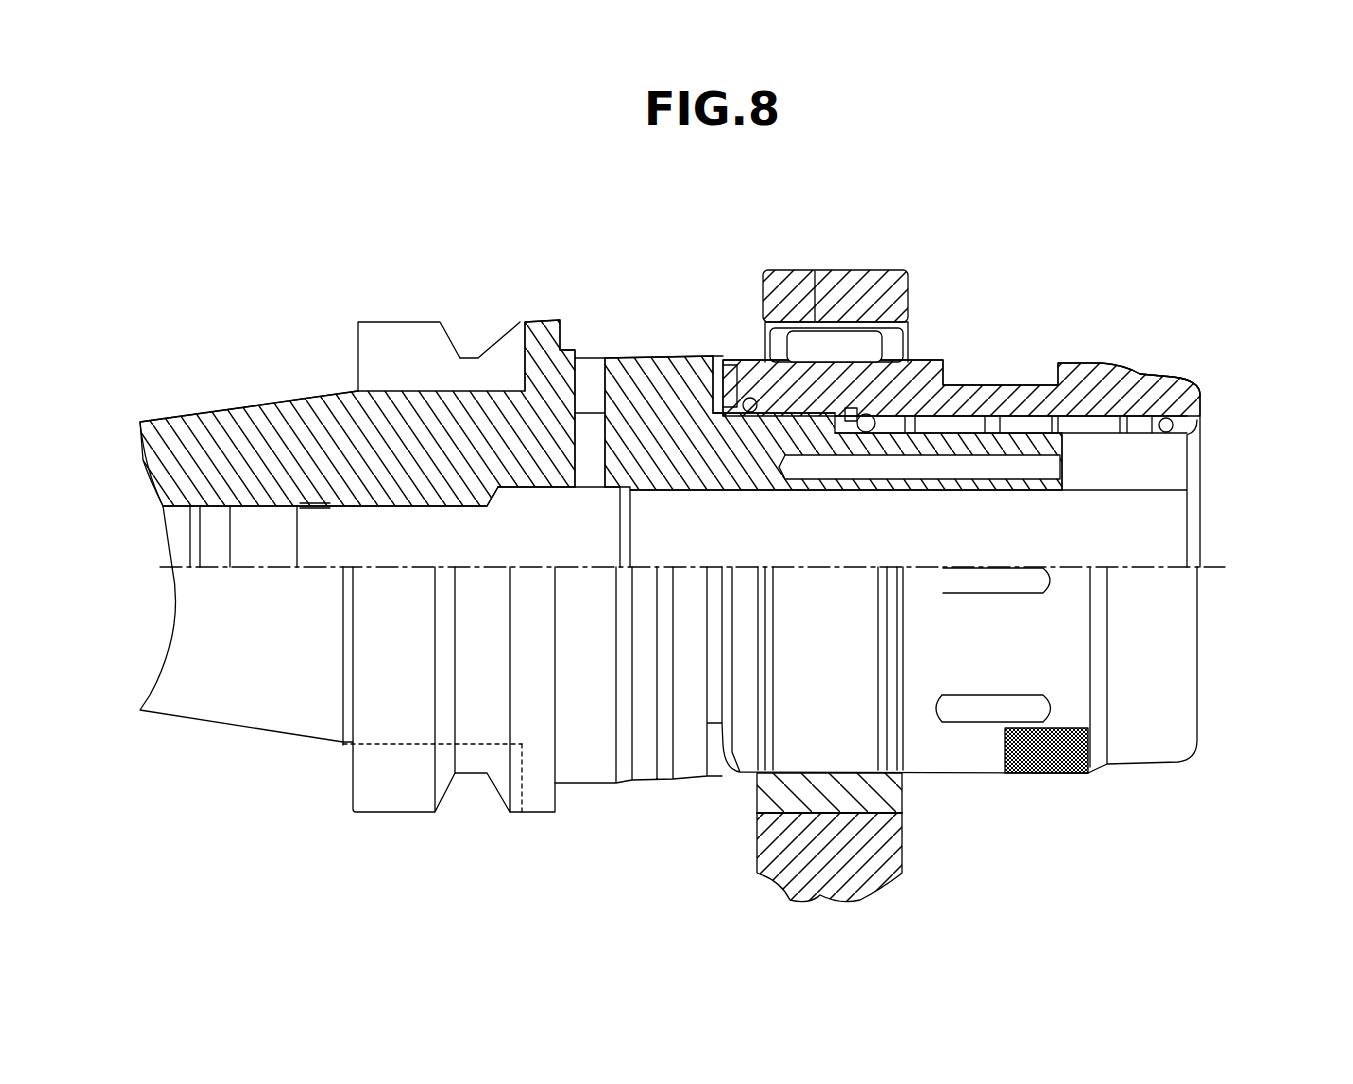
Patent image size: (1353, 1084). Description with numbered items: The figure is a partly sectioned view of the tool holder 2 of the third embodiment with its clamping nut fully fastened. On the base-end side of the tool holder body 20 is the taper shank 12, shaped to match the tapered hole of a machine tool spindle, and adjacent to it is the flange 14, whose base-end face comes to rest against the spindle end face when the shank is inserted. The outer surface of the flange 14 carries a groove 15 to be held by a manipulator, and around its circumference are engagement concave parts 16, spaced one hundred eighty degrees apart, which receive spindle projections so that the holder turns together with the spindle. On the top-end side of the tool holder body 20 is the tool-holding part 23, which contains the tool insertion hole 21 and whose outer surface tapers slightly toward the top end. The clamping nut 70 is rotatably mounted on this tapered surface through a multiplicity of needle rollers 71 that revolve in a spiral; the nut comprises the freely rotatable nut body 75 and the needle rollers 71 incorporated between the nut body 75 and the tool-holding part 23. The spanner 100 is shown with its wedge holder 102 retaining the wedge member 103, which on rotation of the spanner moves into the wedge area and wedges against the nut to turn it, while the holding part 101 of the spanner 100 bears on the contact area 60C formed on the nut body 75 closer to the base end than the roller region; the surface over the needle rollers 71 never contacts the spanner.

The tool holder 2 is at (1016, 230).
The taper shank 12 is at (227, 407).
The flange 14 is at (543, 320).
The groove 15 is at (478, 357).
The engagement concave parts 16 is at (388, 335).
The tool holder body 20 is at (657, 322).
The tool insertion hole 21 is at (1165, 531).
The tool-holding part 23 is at (722, 356).
The clamping nut 70 is at (1125, 355).
The needle rollers 71 is at (1103, 427).
The nut body 75 is at (1165, 373).
The spanner 100 is at (890, 272).
The holding part 101 is at (818, 350).
The wedge holder 102 is at (912, 325).
The wedge member 103 is at (860, 348).
The contact area 60C is at (822, 773).